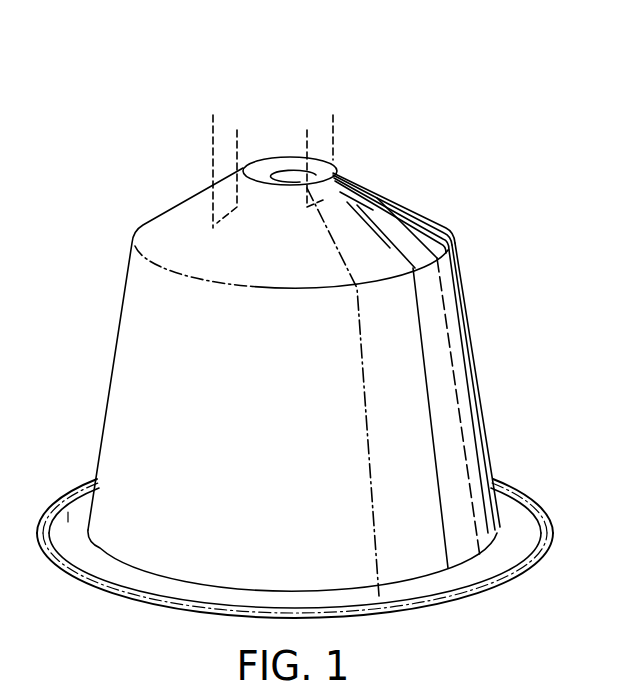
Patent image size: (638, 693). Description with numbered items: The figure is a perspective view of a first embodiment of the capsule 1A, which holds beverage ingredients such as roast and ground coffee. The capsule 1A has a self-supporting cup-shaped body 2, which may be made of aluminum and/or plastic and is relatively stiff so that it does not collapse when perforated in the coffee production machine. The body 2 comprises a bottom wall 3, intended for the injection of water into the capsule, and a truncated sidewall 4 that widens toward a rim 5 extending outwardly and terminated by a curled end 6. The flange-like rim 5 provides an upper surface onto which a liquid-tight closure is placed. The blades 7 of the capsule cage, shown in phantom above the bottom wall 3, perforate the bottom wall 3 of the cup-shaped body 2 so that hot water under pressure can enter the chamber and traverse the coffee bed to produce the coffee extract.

The capsule 1A is at (503, 246).
The cup-shaped body 2 is at (484, 371).
The bottom wall 3 is at (397, 193).
The truncated sidewall 4 is at (116, 368).
The rim 5 is at (67, 502).
The curled end 6 is at (92, 584).
The blades 7 is at (335, 103).